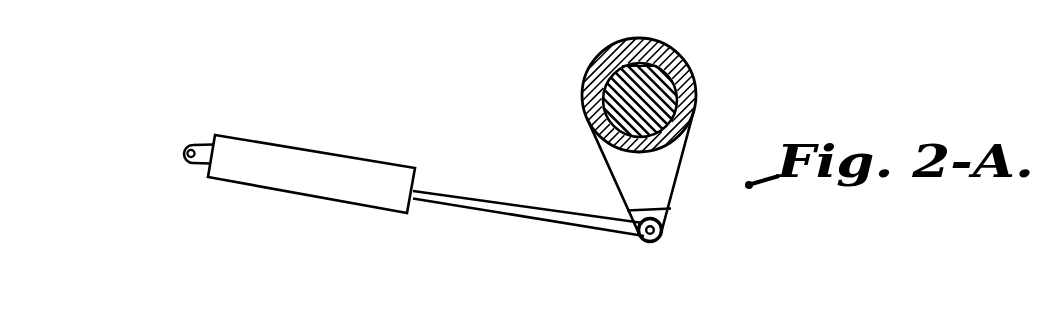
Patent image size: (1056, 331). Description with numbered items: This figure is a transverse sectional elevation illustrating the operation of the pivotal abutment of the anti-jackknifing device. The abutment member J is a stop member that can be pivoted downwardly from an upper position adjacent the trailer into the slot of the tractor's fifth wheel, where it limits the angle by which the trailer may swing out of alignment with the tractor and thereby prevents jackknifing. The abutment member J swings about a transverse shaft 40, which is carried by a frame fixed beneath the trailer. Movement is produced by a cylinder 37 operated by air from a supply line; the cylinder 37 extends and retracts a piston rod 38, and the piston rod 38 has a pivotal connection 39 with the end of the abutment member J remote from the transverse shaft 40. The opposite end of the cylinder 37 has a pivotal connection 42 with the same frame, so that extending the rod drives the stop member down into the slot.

The cylinder 37 is at (317, 162).
The piston rod 38 is at (508, 202).
The pivotal connection 39 is at (641, 240).
The transverse shaft 40 is at (689, 85).
The pivotal connection 42 is at (193, 143).
The abutment member J is at (627, 172).